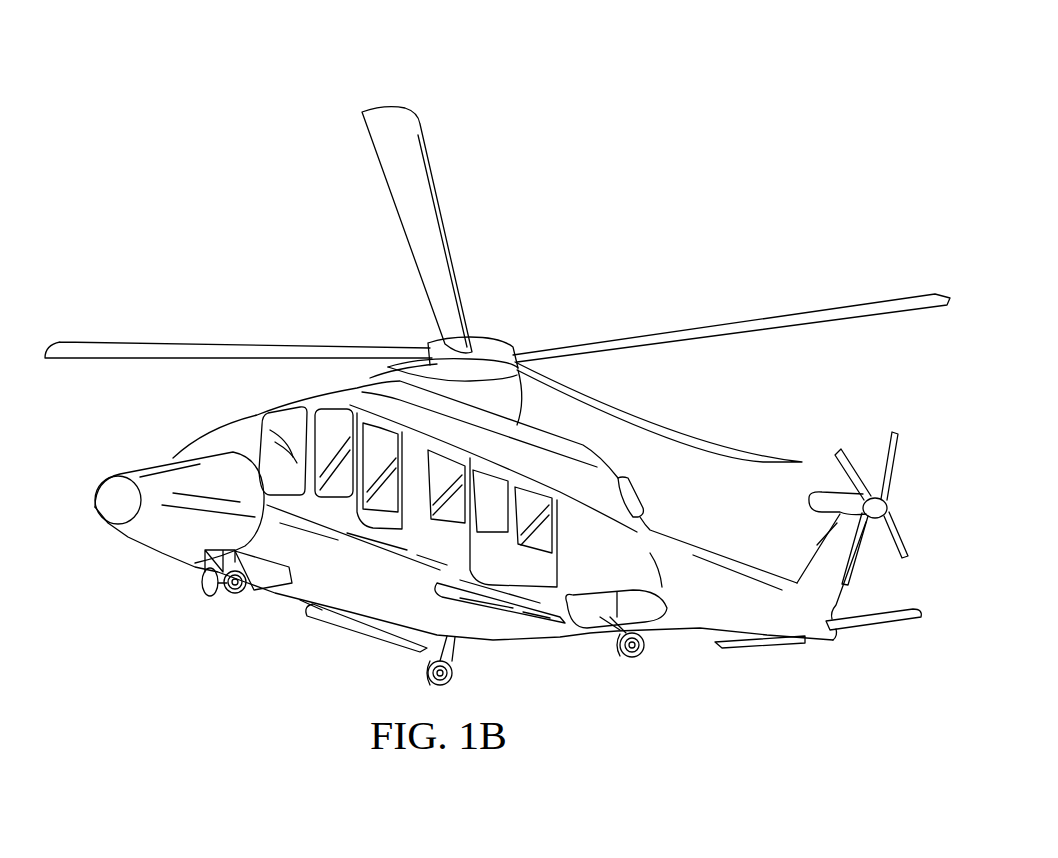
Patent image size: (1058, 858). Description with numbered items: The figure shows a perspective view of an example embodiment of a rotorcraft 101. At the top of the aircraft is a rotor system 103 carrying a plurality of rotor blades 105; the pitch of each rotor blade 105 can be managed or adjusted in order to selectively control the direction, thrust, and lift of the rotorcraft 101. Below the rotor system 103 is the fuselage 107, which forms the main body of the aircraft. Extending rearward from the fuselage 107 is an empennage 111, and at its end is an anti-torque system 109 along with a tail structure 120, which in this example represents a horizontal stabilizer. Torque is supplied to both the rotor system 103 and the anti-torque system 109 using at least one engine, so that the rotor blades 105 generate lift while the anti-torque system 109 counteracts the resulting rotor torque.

The rotorcraft 101 is at (271, 73).
The rotor system 103 is at (345, 257).
The rotor blade 105 is at (720, 338).
The fuselage 107 is at (303, 594).
The anti-torque system 109 is at (921, 411).
The empennage 111 is at (695, 622).
The tail structure 120 is at (880, 627).